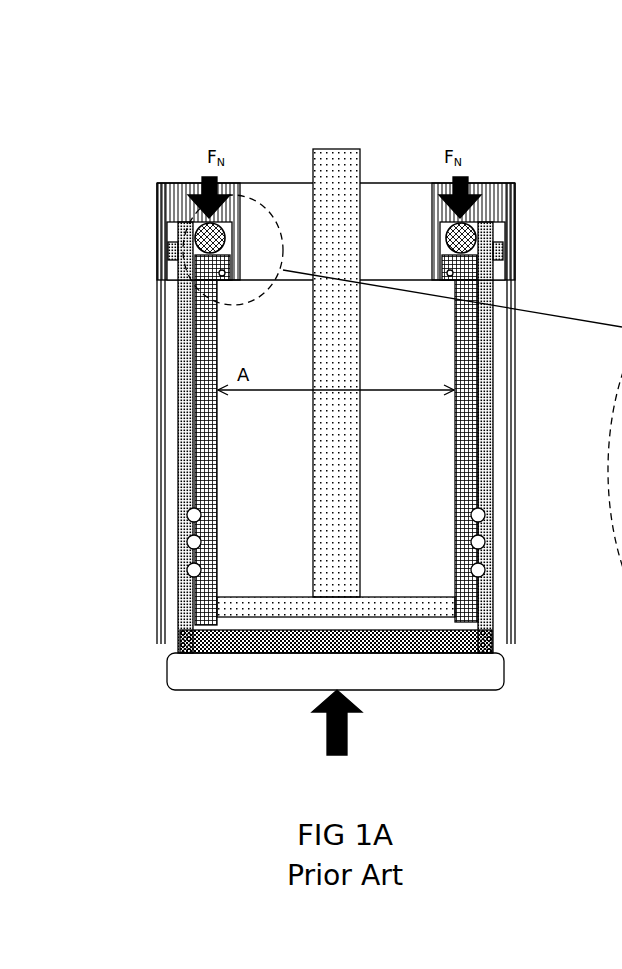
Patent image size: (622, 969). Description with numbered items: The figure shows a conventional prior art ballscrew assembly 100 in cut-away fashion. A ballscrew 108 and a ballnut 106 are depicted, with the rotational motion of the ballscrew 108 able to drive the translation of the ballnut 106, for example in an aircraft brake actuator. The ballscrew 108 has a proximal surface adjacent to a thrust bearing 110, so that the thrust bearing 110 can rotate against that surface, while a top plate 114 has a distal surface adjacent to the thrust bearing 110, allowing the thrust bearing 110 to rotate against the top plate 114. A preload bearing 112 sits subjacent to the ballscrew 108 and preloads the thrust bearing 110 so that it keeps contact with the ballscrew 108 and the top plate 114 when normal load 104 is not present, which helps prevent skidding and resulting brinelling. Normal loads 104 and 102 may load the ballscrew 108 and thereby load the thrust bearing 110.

The ballscrew assembly 100 is at (172, 112).
The normal load 102 is at (160, 283).
The normal load 104 is at (367, 732).
The ballnut 106 is at (489, 248).
The ballscrew 108 is at (207, 350).
The thrust bearing 110 is at (503, 211).
The preload bearing 112 is at (440, 266).
The top plate 114 is at (470, 236).